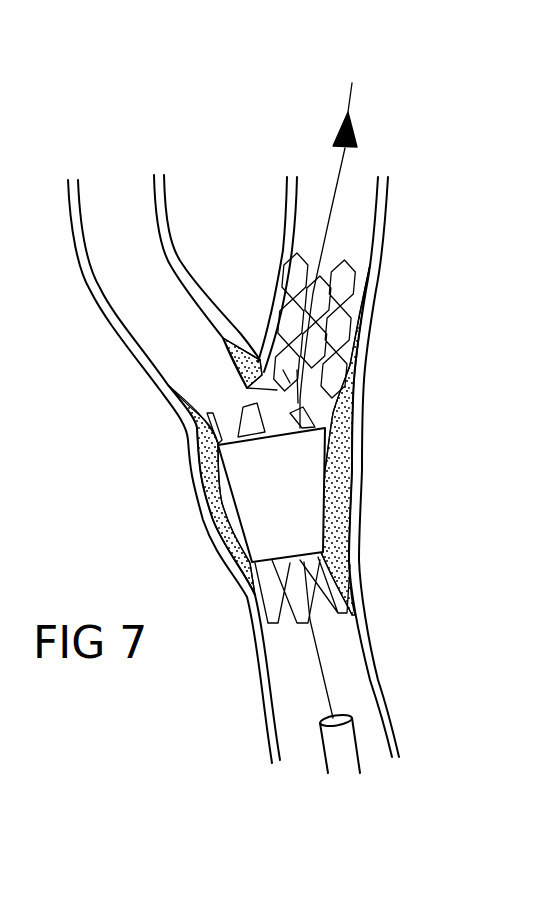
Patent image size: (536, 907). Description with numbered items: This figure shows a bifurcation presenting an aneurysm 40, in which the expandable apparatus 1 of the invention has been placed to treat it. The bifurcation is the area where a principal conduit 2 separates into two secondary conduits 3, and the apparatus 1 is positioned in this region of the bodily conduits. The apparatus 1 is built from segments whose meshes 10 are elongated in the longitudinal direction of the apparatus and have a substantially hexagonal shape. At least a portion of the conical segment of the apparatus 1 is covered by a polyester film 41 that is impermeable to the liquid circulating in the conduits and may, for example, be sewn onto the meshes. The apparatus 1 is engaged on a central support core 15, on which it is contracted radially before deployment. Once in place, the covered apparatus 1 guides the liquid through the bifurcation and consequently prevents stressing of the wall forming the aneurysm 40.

The expandable apparatus 1 is at (323, 400).
The principal conduit 2 is at (263, 675).
The secondary conduits 3 is at (372, 291).
The meshes 10 is at (340, 350).
The central support core 15 is at (343, 745).
The aneurysm 40 is at (181, 511).
The polyester film 41 is at (285, 507).